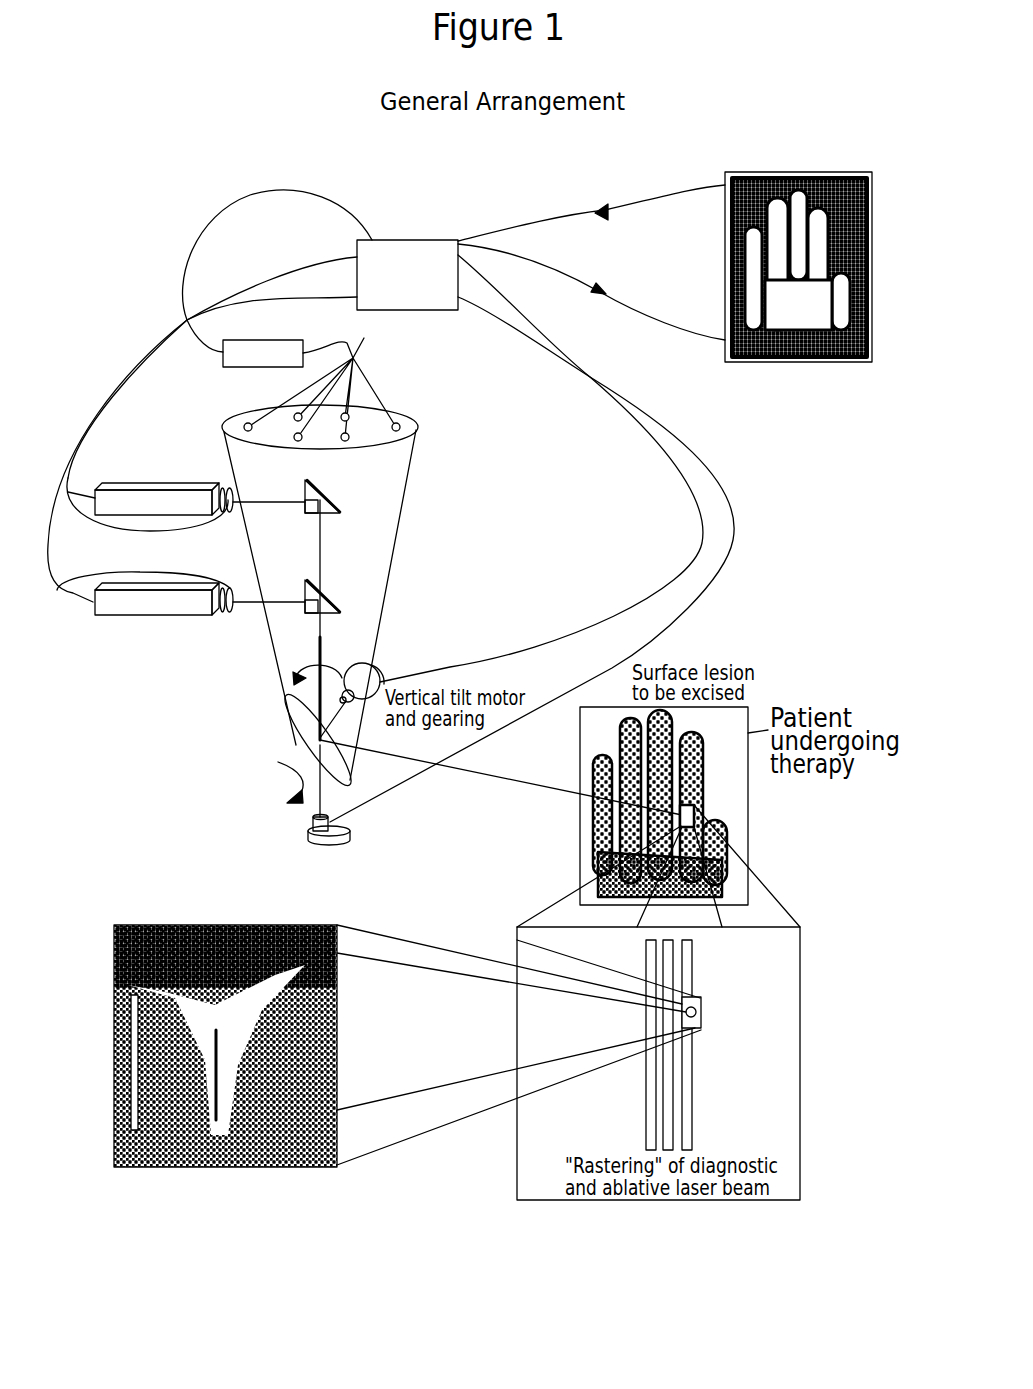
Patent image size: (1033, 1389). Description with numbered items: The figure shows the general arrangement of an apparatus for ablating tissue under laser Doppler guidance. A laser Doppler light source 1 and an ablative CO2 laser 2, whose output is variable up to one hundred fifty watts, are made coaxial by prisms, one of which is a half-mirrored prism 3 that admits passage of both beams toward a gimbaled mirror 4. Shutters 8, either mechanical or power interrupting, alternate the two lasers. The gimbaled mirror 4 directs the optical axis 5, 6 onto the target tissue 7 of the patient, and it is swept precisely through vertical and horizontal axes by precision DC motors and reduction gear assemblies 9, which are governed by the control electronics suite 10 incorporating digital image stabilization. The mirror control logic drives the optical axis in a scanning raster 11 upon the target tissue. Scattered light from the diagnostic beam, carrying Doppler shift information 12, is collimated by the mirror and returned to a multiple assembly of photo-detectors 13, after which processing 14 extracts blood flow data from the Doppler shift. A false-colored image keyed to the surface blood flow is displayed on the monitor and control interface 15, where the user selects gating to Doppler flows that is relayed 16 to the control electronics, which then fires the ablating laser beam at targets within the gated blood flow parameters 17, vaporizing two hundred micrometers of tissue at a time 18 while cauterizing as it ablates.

The laser Doppler light source 1 is at (187, 579).
The ablative CO2 laser 2 is at (199, 473).
The half-mirrored prism 3 is at (379, 605).
The gimbaled mirror 4 is at (253, 745).
The optical axis 5 is at (317, 684).
The optical axis 6 is at (501, 777).
The target tissue 7 is at (658, 854).
The shutter 8 is at (223, 604).
The precision DC motors and reduction gear assemblies 9 is at (408, 844).
The control electronics suite 10 is at (428, 228).
The raster upon the target tissue 11 is at (537, 1045).
The scattered laser light containing Doppler shift information 12 is at (405, 530).
The multiple assembly of photo-detectors 13 is at (393, 383).
The Doppler shift processing 14 is at (220, 365).
The monitor/control interface console 15 is at (810, 313).
The control electronics relay 16 is at (591, 250).
The ablating laser beam fired at gated targets 17 is at (323, 495).
The vaporized tissue layer 18 is at (230, 1046).